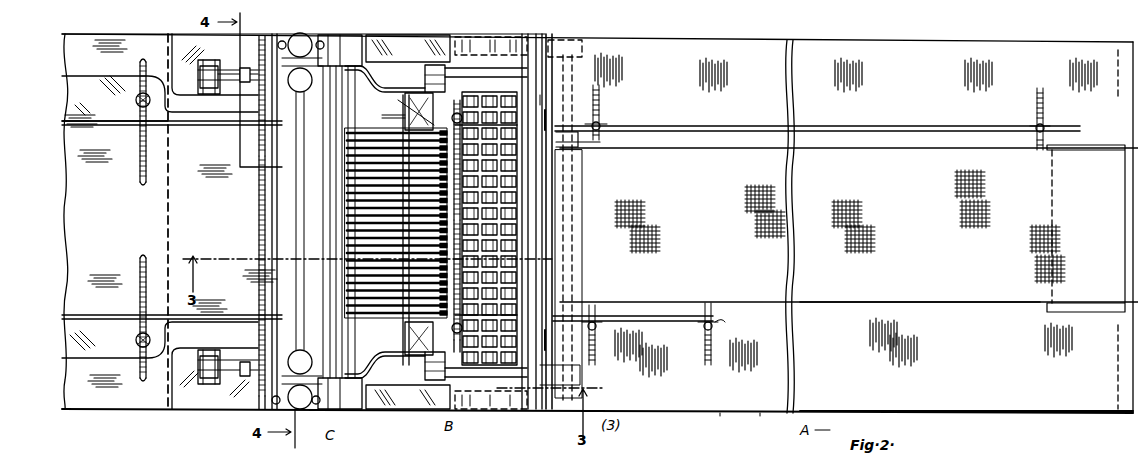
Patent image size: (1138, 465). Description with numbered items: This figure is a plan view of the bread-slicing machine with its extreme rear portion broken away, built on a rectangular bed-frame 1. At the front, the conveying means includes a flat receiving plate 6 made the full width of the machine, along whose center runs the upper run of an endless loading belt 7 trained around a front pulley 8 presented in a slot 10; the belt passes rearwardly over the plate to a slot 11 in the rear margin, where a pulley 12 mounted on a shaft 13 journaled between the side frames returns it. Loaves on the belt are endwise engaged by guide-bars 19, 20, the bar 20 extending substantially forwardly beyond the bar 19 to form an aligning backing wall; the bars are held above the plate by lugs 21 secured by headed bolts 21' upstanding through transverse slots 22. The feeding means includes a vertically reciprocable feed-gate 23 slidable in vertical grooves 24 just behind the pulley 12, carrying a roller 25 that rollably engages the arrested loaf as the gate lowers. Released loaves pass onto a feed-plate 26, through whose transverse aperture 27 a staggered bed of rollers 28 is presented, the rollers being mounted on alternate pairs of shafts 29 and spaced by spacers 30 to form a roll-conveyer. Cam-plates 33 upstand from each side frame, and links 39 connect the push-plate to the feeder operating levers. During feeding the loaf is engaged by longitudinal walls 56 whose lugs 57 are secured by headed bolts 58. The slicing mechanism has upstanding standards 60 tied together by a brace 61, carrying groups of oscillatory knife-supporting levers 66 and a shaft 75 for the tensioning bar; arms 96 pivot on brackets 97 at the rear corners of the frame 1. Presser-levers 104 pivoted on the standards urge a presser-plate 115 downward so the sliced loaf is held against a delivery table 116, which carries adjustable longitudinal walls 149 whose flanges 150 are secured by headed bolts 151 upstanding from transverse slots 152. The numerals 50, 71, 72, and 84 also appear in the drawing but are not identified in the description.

The bed-frame 1 is at (405, 410).
The receiving table or plate 6 is at (1020, 412).
The loaf-conveyer or loading belt 7 is at (966, 300).
The front pulley 8 is at (1050, 312).
The slot 10 is at (1086, 312).
The slot 11 is at (585, 126).
The pulley 12 is at (572, 197).
The shaft 13 is at (590, 185).
The guide-bar 19 is at (690, 315).
The guide-bar 20 is at (888, 118).
The lug 21 is at (802, 228).
The headed bolt 21' is at (828, 211).
The transverse slot 22 is at (598, 86).
The stop or feed-gate 23 is at (560, 282).
The vertical groove 24 is at (565, 33).
The roller 25 is at (566, 247).
The feed-plate 26 is at (490, 385).
The transverse aperture 27 is at (535, 400).
The roller 28 is at (566, 214).
The shaft 29 is at (483, 213).
The spacer 30 is at (483, 220).
The cam-plate 33 is at (545, 360).
The link 39 is at (495, 72).
The member 50 is at (512, 157).
The longitudinal wall 56 is at (440, 120).
The lug 57 is at (486, 222).
The headed bolt 58 is at (404, 334).
The standard 60 is at (358, 33).
The brace 61 is at (272, 236).
The knife-supporting lever 66 is at (352, 192).
The member 71 is at (773, 439).
The member 72 is at (719, 439).
The shaft 75 is at (259, 198).
The pulleys 84 is at (302, 45).
The arm 96 is at (225, 70).
The bracket 97 is at (222, 60).
The presser-lever 104 is at (402, 88).
The presser-plate 115 is at (404, 105).
The delivery table 116 is at (186, 221).
The longitudinal wall 149 is at (108, 125).
The flange 150 is at (116, 84).
The headed bolt 151 is at (140, 107).
The transverse slot 152 is at (142, 186).